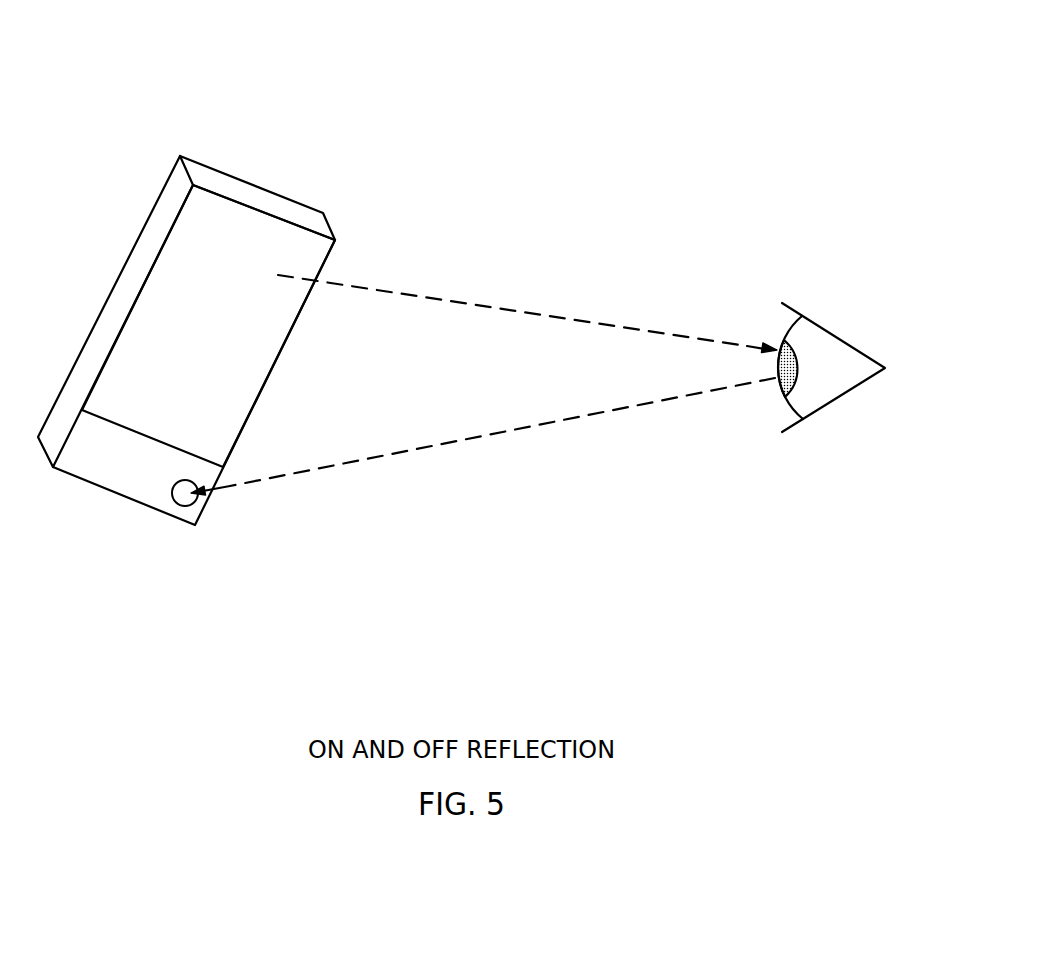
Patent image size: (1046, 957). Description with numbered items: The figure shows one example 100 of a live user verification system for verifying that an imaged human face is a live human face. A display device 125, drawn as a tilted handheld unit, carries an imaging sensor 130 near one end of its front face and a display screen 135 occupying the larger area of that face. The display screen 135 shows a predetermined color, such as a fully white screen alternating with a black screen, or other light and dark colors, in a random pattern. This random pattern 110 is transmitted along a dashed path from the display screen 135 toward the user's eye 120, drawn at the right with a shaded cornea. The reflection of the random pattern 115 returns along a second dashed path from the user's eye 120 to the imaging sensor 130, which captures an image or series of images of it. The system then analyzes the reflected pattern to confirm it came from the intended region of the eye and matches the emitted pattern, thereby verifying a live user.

The live user verification system 100 is at (620, 69).
The random pattern 110 is at (478, 307).
The reflection of the random pattern 115 is at (467, 440).
The user's eye 120 is at (788, 368).
The display device 125 is at (135, 242).
The imaging sensor 130 is at (183, 507).
The display screen 135 is at (130, 343).